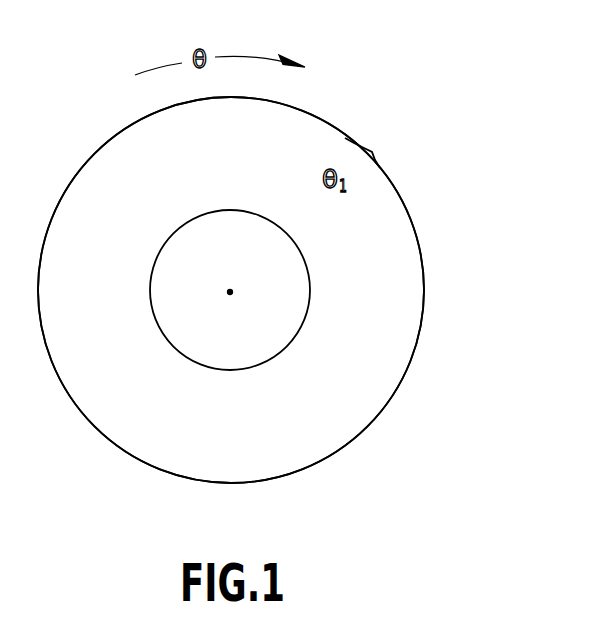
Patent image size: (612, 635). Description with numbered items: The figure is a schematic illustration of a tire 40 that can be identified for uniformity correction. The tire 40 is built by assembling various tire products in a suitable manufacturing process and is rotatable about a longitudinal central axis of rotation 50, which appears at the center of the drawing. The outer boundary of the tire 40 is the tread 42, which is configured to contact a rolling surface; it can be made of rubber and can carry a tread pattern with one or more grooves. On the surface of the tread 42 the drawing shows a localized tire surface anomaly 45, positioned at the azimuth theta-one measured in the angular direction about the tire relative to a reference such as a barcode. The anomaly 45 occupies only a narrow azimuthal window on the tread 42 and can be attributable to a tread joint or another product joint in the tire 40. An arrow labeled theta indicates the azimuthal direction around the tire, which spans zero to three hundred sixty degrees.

The tire 40 is at (363, 376).
The tread 42 is at (422, 292).
The localized tire surface anomaly 45 is at (372, 152).
The longitudinal central axis of rotation 50 is at (230, 292).